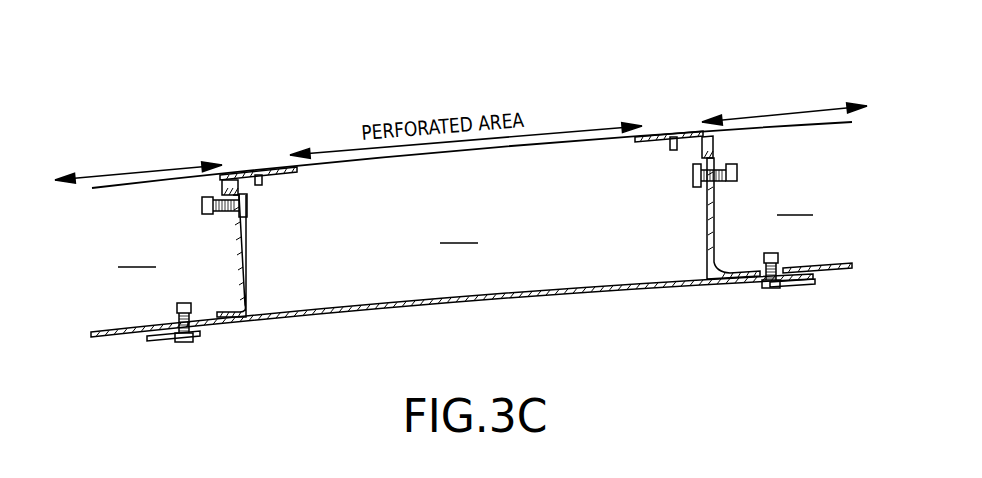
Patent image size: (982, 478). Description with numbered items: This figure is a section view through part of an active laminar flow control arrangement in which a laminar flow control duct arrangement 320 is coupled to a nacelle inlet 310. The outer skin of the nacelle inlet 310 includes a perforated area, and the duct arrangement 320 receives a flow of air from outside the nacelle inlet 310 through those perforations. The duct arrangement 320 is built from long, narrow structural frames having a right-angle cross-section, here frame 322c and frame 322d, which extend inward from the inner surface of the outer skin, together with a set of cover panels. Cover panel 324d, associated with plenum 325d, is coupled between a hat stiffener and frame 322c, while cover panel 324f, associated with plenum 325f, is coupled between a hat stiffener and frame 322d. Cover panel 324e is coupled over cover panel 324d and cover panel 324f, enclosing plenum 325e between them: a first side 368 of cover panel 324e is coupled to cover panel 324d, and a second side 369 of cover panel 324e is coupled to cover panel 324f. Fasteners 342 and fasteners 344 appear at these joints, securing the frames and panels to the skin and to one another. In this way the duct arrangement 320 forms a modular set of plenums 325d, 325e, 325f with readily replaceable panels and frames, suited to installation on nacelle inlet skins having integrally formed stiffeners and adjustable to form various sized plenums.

The nacelle inlet 310 is at (118, 183).
The laminar flow control duct arrangement 320 is at (477, 282).
The frame 322c is at (235, 170).
The frame 322d is at (698, 132).
The cover panel 324d is at (97, 335).
The cover panel 324e is at (563, 290).
The cover panel 324f is at (839, 270).
The plenum 325d is at (182, 248).
The plenum 325e is at (459, 232).
The plenum 325f is at (758, 207).
The fastener 342 is at (243, 212).
The fastener 344 is at (260, 173).
The first side 368 is at (158, 350).
The second side 369 is at (810, 295).